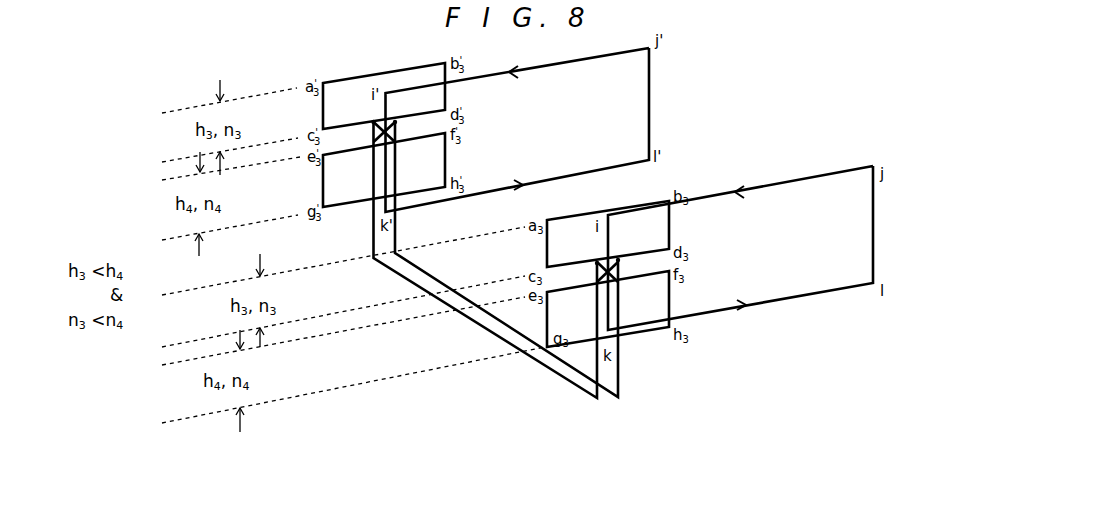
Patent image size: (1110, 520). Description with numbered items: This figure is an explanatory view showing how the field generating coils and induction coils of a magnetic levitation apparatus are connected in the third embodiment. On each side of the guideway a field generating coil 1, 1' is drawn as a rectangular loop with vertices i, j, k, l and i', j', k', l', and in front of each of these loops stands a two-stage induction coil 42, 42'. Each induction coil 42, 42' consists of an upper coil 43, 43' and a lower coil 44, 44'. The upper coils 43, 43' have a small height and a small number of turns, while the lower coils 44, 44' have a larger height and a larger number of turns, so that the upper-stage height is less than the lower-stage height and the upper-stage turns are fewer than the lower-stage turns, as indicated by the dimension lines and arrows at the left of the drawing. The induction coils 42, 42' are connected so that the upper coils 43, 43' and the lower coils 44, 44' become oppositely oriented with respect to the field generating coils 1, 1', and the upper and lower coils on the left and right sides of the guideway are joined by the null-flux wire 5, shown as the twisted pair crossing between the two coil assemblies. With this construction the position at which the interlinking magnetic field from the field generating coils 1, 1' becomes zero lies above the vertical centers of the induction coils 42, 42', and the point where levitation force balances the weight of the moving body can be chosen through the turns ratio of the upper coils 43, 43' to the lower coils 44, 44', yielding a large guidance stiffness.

The field generating coil 1 is at (740, 248).
The field generating coil 1' is at (518, 130).
The null-flux wire 5 is at (412, 278).
The induction coil 42 is at (643, 287).
The induction coil 42' is at (423, 145).
The upper coil of induction coil 43 is at (608, 219).
The upper coil of induction coil 43' is at (384, 80).
The lower coil of induction coil 44 is at (613, 337).
The lower coil of induction coil 44' is at (384, 196).